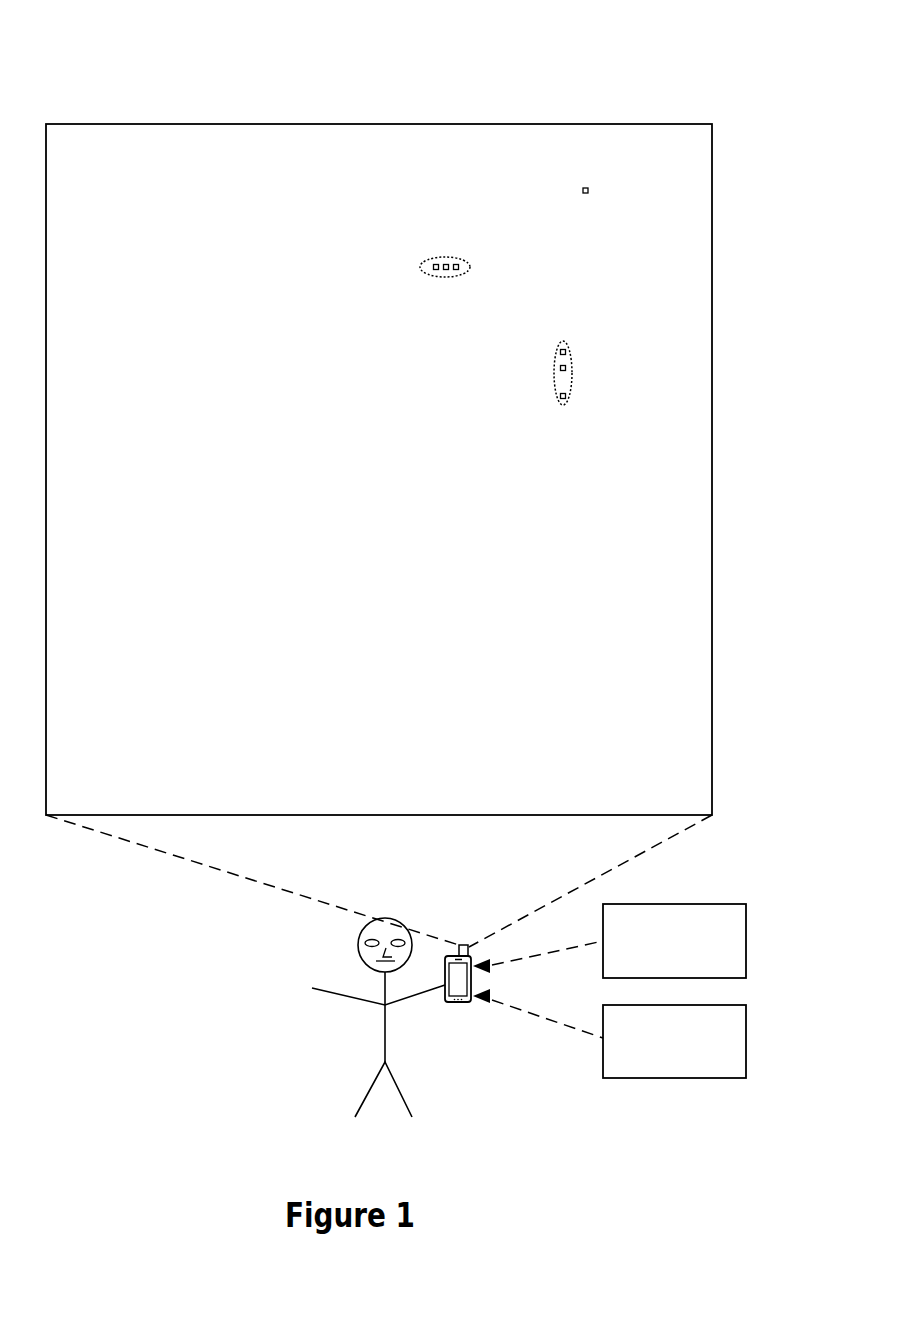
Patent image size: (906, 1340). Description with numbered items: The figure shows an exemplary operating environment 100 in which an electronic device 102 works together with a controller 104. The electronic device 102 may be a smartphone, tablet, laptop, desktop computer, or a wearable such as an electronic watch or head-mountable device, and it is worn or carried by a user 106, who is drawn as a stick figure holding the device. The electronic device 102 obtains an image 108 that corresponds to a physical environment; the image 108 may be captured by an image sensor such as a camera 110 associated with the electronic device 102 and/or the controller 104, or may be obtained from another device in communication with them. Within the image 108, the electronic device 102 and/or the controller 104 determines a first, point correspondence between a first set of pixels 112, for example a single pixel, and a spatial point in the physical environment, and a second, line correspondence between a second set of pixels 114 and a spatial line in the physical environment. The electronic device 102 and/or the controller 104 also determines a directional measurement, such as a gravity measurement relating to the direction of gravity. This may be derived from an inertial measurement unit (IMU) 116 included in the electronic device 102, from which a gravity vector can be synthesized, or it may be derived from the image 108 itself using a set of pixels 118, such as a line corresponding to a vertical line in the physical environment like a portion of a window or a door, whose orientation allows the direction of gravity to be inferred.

The operating environment 100 is at (109, 36).
The electronic device 102 is at (471, 1003).
The controller 104 is at (656, 966).
The user 106 is at (360, 1104).
The image 108 is at (433, 807).
The camera 110 is at (468, 951).
The first set of pixels 112 is at (585, 193).
The second set of pixels 114 is at (470, 268).
The inertial measurement unit (IMU) 116 is at (656, 1067).
The set of pixels 118 is at (571, 362).